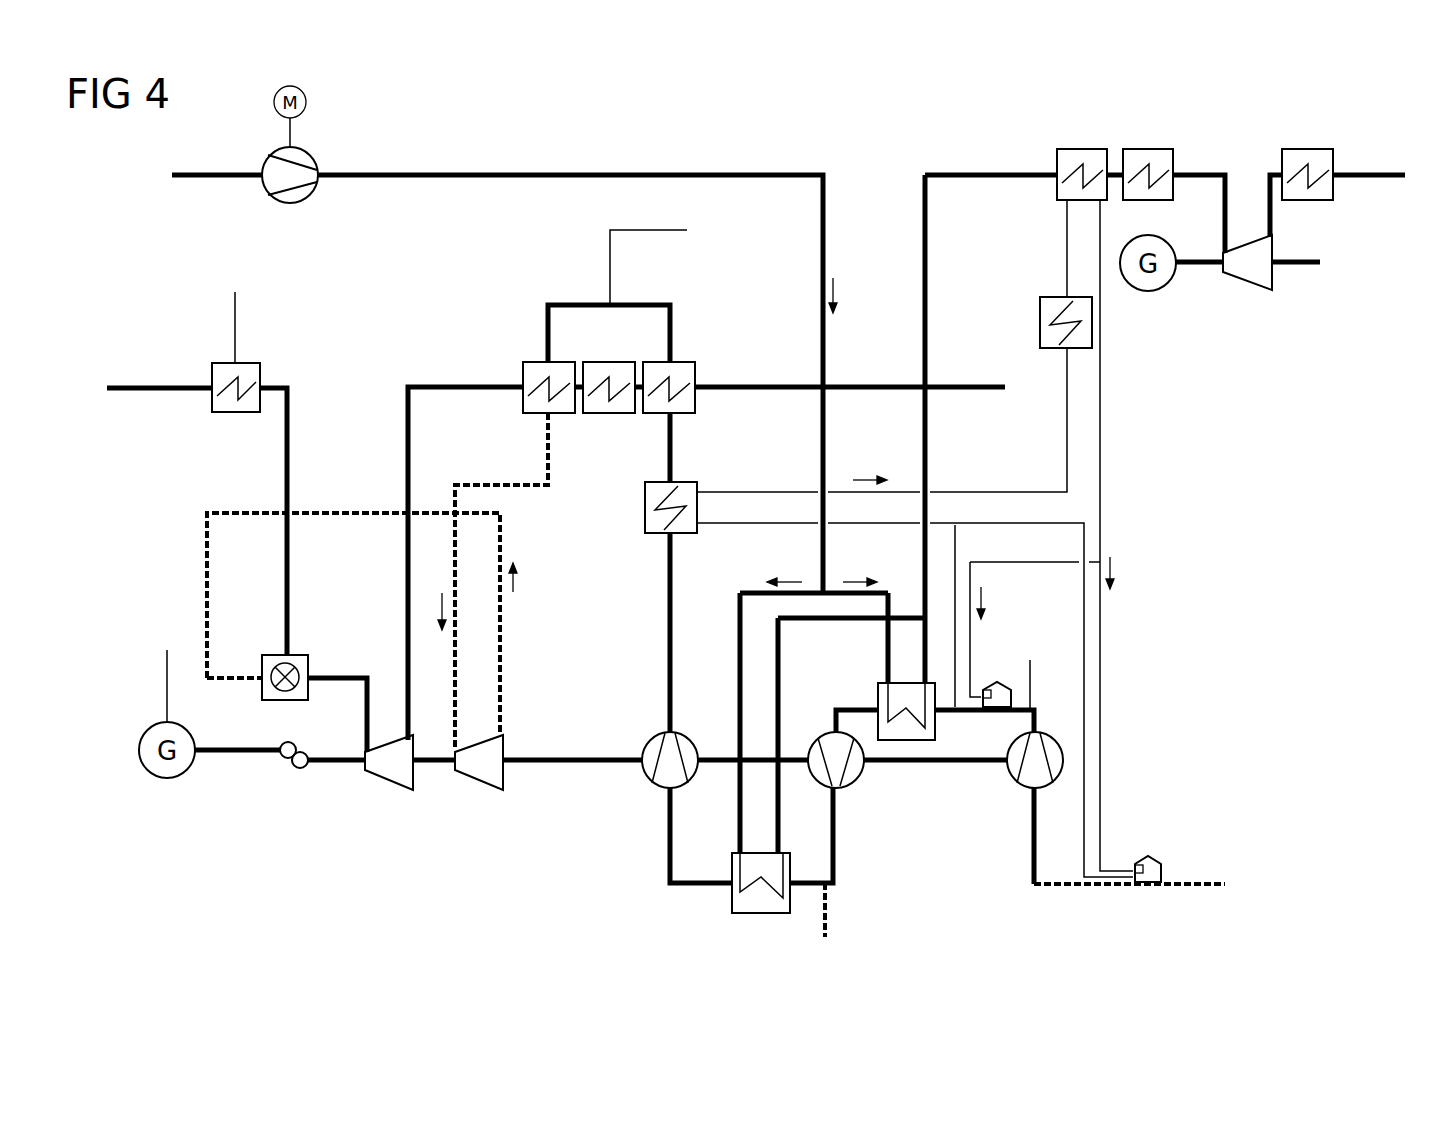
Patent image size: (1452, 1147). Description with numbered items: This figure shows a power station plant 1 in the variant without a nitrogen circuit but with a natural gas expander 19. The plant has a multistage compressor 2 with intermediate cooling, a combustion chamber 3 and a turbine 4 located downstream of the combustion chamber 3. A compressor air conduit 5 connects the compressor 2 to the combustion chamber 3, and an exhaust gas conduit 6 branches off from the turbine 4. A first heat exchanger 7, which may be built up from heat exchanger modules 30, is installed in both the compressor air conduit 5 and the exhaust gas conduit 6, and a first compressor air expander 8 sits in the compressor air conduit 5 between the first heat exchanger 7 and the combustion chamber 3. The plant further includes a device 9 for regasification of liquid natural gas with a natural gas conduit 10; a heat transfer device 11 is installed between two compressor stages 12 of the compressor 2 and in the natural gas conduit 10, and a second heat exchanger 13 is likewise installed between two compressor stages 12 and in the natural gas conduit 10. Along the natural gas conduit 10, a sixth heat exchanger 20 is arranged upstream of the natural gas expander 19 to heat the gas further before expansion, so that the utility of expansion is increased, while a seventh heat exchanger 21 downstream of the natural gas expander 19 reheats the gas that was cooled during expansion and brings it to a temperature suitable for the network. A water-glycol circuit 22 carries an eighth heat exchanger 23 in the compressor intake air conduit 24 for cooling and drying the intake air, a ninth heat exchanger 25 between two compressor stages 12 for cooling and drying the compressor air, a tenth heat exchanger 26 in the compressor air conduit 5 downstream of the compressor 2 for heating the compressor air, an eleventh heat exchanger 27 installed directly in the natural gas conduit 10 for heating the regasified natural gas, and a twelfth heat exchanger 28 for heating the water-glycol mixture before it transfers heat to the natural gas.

The power station plant 1 is at (1400, 306).
The multistage compressor 2 is at (930, 858).
The combustion chamber 3 is at (297, 655).
The turbine 4 is at (390, 782).
The compressor air conduit 5 is at (335, 513).
The exhaust gas conduit 6 is at (433, 380).
The first heat exchanger 7 is at (540, 362).
The heat exchanger modules 30 is at (683, 362).
The first compressor air expander 8 is at (480, 782).
The device for regasification of liquid natural gas 9 is at (820, 131).
The natural gas conduit 10 is at (579, 170).
The heat transfer device 11 is at (952, 444).
The compressor stages 12 is at (658, 790).
The second heat exchanger 13 is at (908, 742).
The natural gas expander 19 is at (1243, 287).
The sixth heat exchanger 20 is at (1147, 149).
The seventh heat exchanger 21 is at (1305, 149).
The water-glycol circuit 22 is at (1100, 428).
The eighth heat exchanger 23 is at (1152, 855).
The compressor intake air conduit 24 is at (1196, 888).
The ninth heat exchanger 25 is at (1000, 683).
The tenth heat exchanger 26 is at (645, 512).
The eleventh heat exchanger 27 is at (1082, 149).
The twelfth heat exchanger 28 is at (1017, 320).